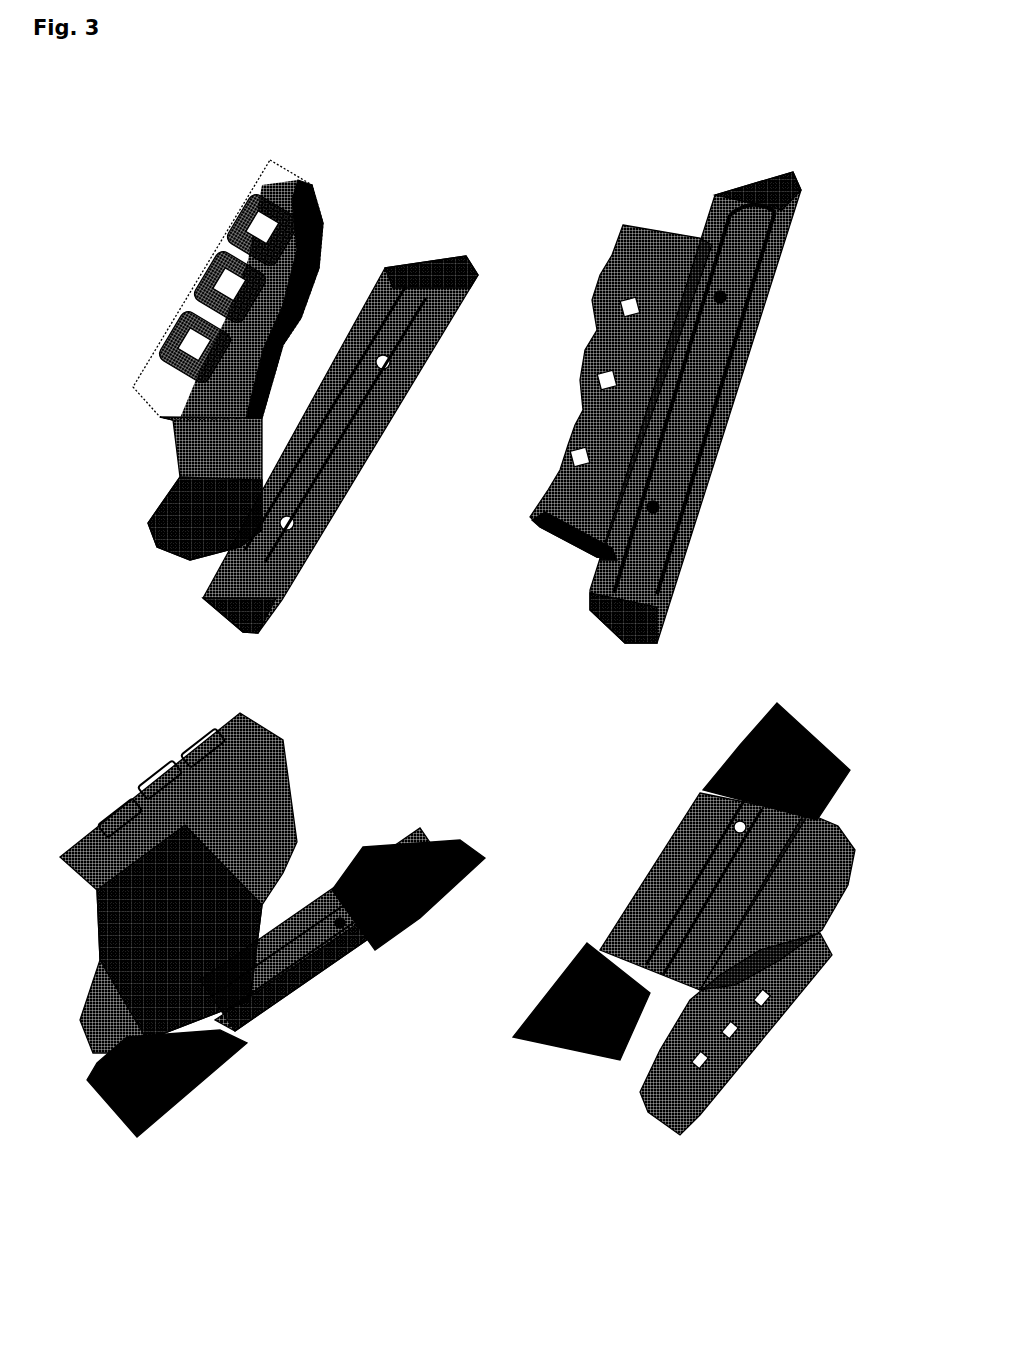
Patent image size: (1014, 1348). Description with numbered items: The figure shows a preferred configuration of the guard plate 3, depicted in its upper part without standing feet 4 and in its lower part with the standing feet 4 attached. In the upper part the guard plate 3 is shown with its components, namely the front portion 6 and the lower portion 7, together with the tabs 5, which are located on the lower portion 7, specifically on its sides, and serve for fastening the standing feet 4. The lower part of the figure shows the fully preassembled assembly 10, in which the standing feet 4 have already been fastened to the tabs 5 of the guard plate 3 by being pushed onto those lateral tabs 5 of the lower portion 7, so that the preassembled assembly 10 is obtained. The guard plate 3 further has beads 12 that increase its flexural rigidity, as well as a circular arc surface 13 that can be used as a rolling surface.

The guard plate 3 is at (470, 631).
The standing feet 4 is at (418, 925).
The tabs 5 is at (476, 293).
The front portion 6 is at (162, 447).
The lower portion 7 is at (355, 475).
The assembly 10 is at (277, 1040).
The beads 12 is at (270, 562).
The circular arc surface 13 is at (148, 548).